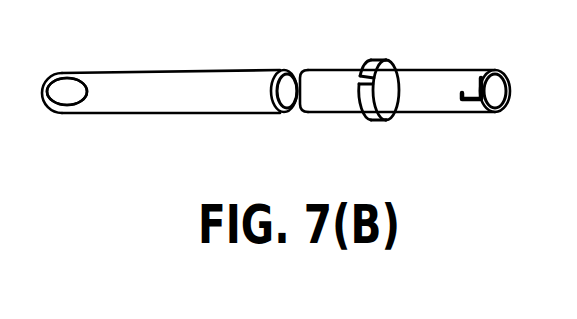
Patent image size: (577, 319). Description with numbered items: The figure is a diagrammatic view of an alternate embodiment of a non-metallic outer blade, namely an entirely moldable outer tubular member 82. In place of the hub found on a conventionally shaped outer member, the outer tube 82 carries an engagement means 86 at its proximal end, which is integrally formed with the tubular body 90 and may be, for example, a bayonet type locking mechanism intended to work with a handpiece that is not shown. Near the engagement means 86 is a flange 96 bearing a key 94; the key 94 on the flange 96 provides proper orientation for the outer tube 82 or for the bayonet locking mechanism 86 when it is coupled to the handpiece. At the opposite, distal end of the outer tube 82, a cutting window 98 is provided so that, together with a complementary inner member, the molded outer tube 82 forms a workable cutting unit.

The outer tubular member 82 is at (325, 115).
The engagement means 86 is at (505, 74).
The tubular body 90 is at (255, 115).
The key 94 is at (360, 77).
The flange 96 is at (395, 63).
The cutting window 98 is at (68, 78).